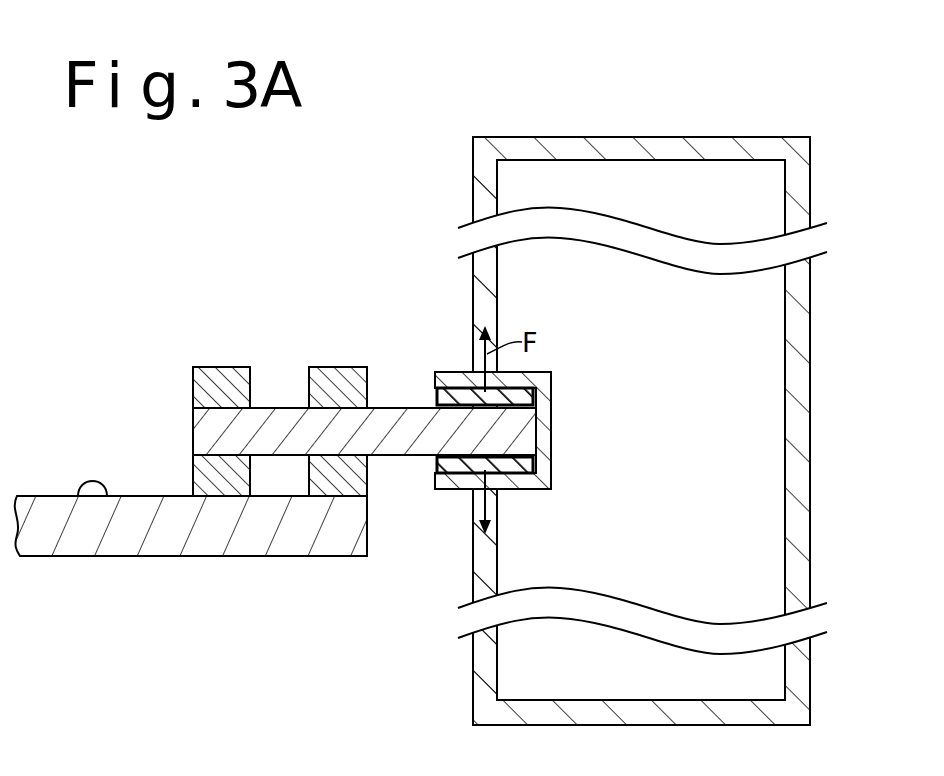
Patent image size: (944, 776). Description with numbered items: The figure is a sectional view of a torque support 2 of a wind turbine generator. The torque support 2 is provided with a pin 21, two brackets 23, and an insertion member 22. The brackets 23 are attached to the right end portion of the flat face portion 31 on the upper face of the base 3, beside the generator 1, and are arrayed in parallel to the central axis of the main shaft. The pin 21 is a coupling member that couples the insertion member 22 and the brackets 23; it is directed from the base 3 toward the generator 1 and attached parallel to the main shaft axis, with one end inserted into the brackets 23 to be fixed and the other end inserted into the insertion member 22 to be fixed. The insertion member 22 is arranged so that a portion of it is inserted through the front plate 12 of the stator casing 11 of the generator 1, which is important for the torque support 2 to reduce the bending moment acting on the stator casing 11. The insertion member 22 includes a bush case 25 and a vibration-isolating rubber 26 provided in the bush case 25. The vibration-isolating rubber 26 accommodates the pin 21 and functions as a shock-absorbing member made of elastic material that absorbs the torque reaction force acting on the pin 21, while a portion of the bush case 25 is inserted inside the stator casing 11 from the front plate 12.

The generator 1 is at (629, 366).
The stator casing 11 is at (583, 137).
The front plate 12 is at (473, 190).
The torque support 2 is at (356, 354).
The pin 21 is at (288, 415).
The insertion member 22 is at (465, 354).
The bracket 23 is at (286, 391).
The bush case 25 is at (551, 434).
The vibration-isolating rubber 26 is at (453, 472).
The base 3 is at (28, 466).
The flat face portion 31 is at (78, 496).